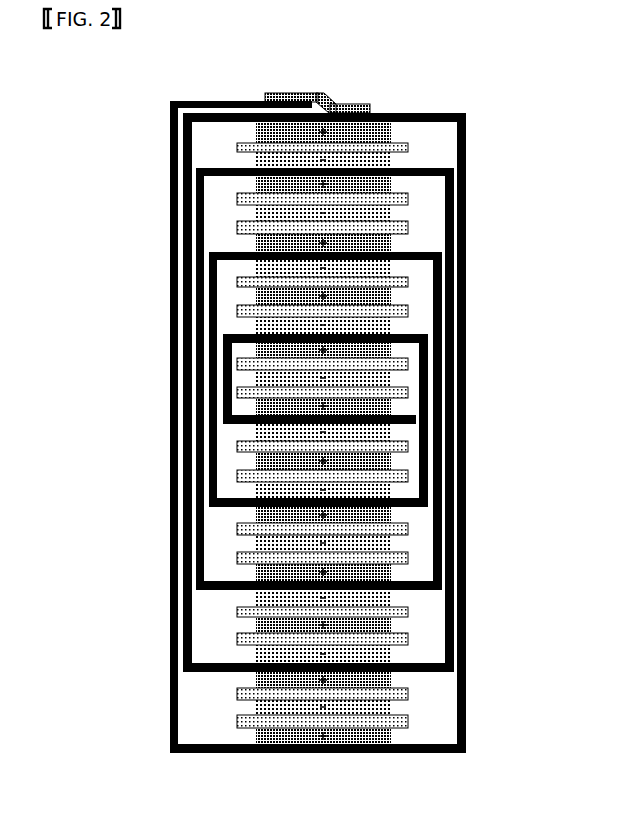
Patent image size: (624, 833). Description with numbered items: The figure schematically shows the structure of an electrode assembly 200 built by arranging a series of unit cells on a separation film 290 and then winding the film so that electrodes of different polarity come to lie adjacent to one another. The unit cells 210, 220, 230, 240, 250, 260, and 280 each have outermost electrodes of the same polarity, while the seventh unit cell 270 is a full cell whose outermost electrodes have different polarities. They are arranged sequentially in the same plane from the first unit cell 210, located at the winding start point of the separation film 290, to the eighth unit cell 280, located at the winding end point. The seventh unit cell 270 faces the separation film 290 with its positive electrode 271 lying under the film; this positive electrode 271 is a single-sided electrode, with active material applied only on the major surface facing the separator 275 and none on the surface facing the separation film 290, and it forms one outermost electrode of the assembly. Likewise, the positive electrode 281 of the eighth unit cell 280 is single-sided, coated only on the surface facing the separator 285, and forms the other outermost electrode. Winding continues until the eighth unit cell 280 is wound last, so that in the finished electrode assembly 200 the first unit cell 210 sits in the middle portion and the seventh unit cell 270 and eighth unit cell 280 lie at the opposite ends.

The electrode assembly 200 is at (110, 105).
The first unit cell 210 is at (408, 407).
The second unit cell 220 is at (408, 487).
The third unit cell 230 is at (408, 322).
The fourth unit cell 240 is at (408, 568).
The fifth unit cell 250 is at (408, 237).
The sixth unit cell 260 is at (408, 650).
The seventh unit cell 270 is at (321, 174).
The positive electrode 271 is at (255, 131).
The separator 275 is at (238, 147).
The eighth unit cell 280 is at (321, 726).
The positive electrode 281 is at (258, 737).
The separator 285 is at (237, 720).
The separation film 290 is at (170, 408).